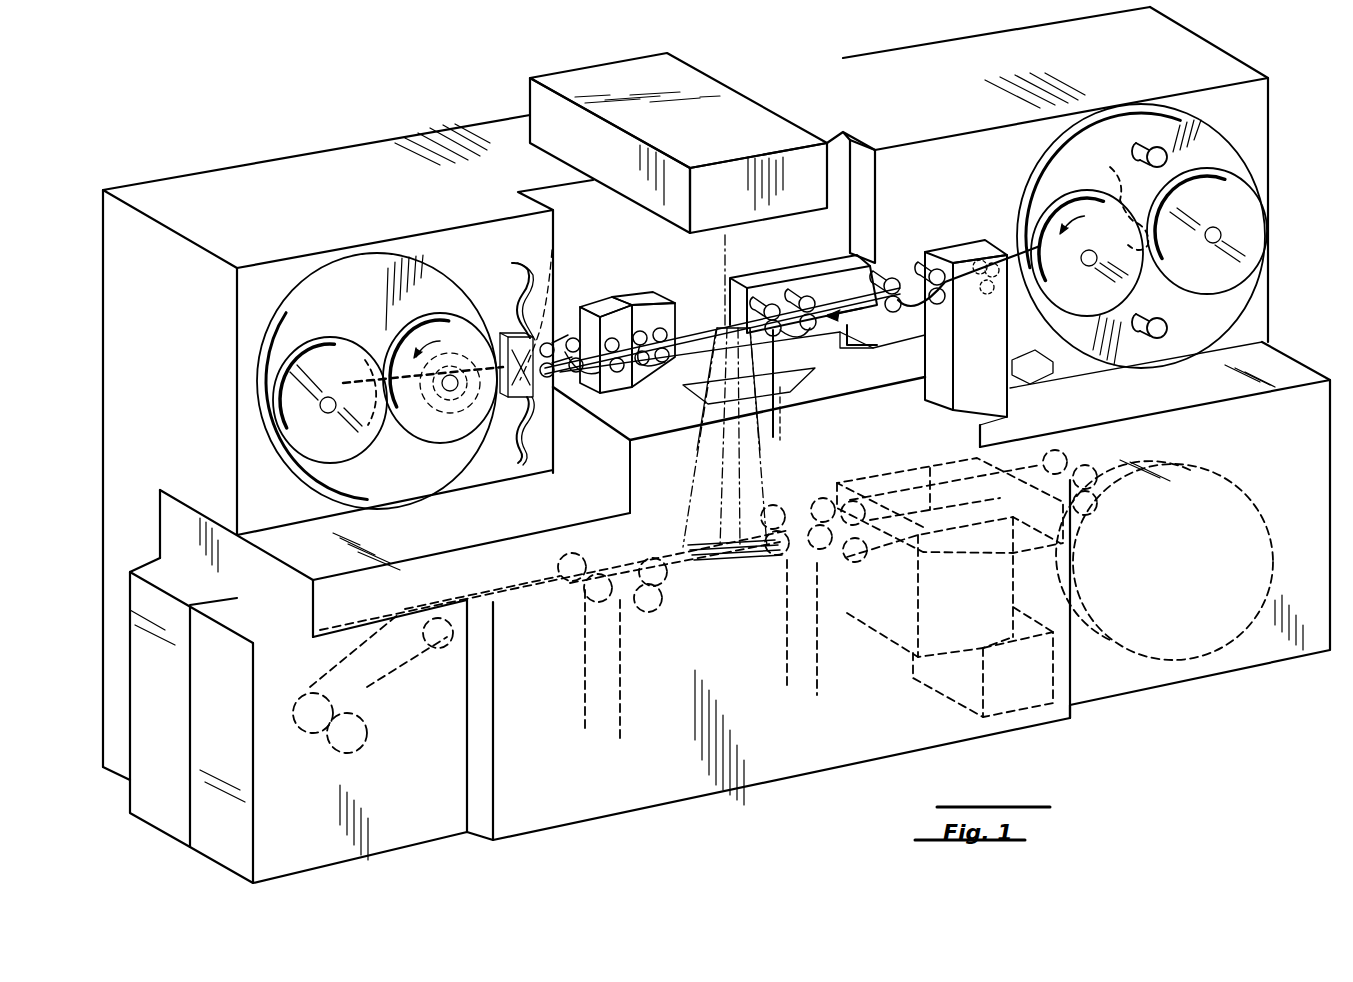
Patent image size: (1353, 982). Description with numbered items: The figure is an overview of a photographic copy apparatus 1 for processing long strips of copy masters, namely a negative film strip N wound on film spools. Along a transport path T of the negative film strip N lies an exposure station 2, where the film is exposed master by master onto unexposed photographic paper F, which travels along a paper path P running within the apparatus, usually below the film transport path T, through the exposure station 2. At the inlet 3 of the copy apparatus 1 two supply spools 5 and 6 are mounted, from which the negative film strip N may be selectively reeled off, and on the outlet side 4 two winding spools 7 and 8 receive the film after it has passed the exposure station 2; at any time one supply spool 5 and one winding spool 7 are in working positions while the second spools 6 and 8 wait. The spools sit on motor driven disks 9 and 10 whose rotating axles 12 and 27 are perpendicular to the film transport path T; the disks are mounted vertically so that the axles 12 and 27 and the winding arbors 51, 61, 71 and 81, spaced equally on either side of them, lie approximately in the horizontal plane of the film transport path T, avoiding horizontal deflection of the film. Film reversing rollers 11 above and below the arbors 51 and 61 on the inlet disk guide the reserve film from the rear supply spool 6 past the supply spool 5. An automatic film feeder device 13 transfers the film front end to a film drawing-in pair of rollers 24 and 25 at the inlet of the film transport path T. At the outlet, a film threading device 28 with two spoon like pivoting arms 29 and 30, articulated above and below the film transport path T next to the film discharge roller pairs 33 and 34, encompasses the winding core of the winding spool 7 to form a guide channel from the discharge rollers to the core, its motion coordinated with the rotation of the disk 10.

The photographic copy apparatus 1 is at (215, 120).
The exposure station 2 is at (690, 282).
The inlet 3 is at (1245, 113).
The outlet side 4 is at (287, 282).
The supply spool 5 is at (1085, 308).
The supply spool 6 is at (1255, 235).
The winding spool 7 is at (460, 330).
The winding spool 8 is at (278, 413).
The disk 9 is at (1228, 150).
The disk 10 is at (305, 330).
The film reversing rollers 11 is at (1150, 148).
The rotating axle 12 is at (1120, 197).
The film feeder device 13 is at (1035, 398).
The film drawing-in roller 24 is at (985, 270).
The film drawing-in roller 25 is at (988, 292).
The rotating axle 27 is at (369, 400).
The film threading device 28 is at (495, 458).
The spoon like pivoting arm 29 is at (548, 256).
The spoon like pivoting arm 30 is at (527, 468).
The film discharge roller pair 33 is at (548, 290).
The film discharge roller pair 34 is at (548, 420).
The winding arbor 51 is at (1087, 264).
The winding arbor 61 is at (1214, 229).
The winding arbor 71 is at (447, 392).
The winding arbor 81 is at (326, 413).
The negative film strip N is at (785, 330).
The transport path T is at (855, 300).
The photographic paper F is at (705, 565).
The paper path P is at (548, 615).